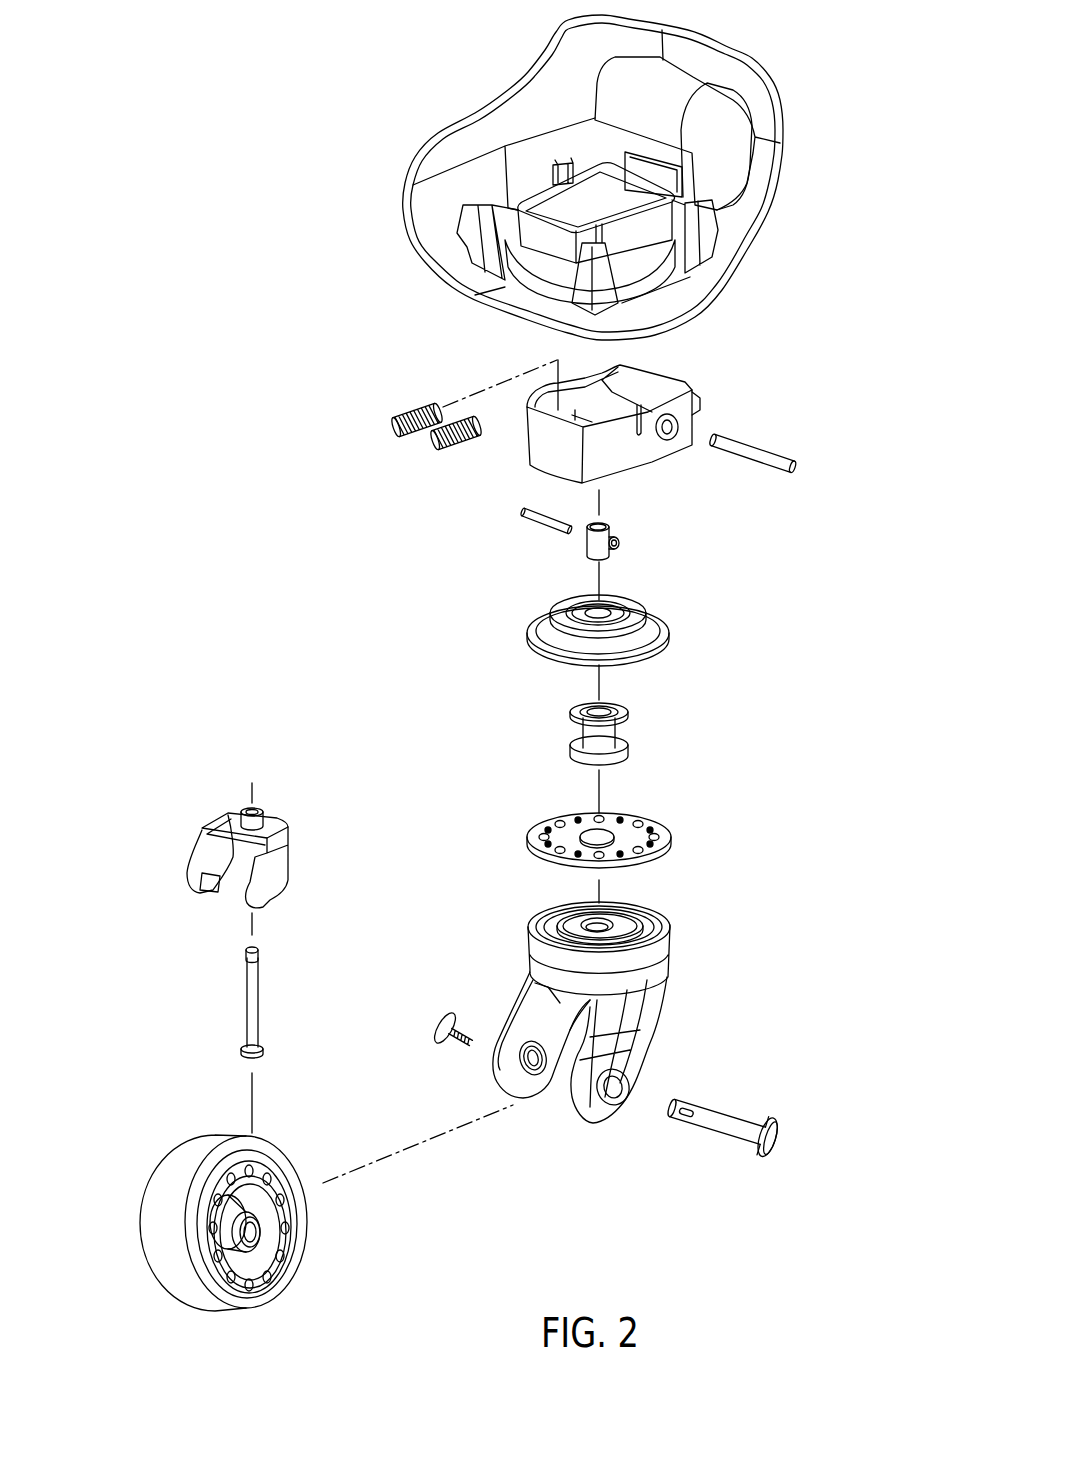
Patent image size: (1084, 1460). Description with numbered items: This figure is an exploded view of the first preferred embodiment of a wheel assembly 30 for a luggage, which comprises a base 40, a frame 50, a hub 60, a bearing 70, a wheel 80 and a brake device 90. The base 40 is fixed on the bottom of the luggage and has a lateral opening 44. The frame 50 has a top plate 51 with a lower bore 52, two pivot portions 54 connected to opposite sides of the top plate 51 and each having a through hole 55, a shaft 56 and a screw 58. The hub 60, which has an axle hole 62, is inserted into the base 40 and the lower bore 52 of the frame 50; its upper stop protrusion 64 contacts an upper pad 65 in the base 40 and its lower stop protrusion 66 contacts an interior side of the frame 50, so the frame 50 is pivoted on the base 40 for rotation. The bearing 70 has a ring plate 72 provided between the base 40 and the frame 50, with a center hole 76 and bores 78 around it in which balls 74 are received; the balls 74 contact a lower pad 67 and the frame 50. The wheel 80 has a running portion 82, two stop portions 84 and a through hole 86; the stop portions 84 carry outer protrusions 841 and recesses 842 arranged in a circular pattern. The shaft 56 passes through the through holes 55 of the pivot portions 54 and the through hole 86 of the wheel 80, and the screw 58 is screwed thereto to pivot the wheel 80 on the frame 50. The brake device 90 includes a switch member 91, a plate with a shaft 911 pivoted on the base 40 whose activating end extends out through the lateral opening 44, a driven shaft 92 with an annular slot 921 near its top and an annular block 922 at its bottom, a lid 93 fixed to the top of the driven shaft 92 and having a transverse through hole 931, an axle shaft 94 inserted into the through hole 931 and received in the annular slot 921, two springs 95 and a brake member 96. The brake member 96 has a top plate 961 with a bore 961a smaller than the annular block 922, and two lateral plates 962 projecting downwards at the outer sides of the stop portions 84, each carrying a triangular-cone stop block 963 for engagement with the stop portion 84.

The wheel assembly 30 is at (178, 155).
The base 40 is at (794, 88).
The lateral opening 44 is at (659, 177).
The switch member 91 is at (673, 380).
The shaft 911 is at (753, 447).
The springs 95 is at (410, 405).
The axle shaft 94 is at (533, 527).
The lid 93 is at (587, 550).
The transverse through hole 931 is at (623, 543).
The upper pad 65 is at (633, 597).
The lower pad 67 is at (657, 642).
The hub 60 is at (677, 734).
The axle hole 62 is at (622, 708).
The upper stop protrusion 64 is at (618, 724).
The lower stop protrusion 66 is at (639, 762).
The bearing 70 is at (538, 781).
The ring plate 72 is at (580, 832).
The balls 74 is at (538, 826).
The center hole 76 is at (548, 833).
The bores 78 is at (538, 850).
The frame 50 is at (618, 1031).
The top plate 51 is at (622, 922).
The lower bore 52 is at (643, 909).
The pivot portions 54 is at (513, 993).
The through hole 55 is at (540, 1075).
The shaft 56 is at (727, 1113).
The screw 58 is at (440, 1017).
The brake device 90 is at (225, 876).
The brake member 96 is at (225, 850).
The top plate 961 is at (223, 817).
The bore 961a is at (247, 805).
The lateral plates 962 is at (200, 843).
The stop block 963 is at (247, 903).
The driven shaft 92 is at (197, 1013).
The annular slot 921 is at (243, 953).
The annular block 922 is at (243, 1051).
The wheel 80 is at (240, 1241).
The running portion 82 is at (147, 1257).
The stop portions 84 is at (318, 1262).
The outer protrusions 841 is at (258, 1228).
The recesses 842 is at (290, 1255).
The through hole 86 is at (280, 1217).